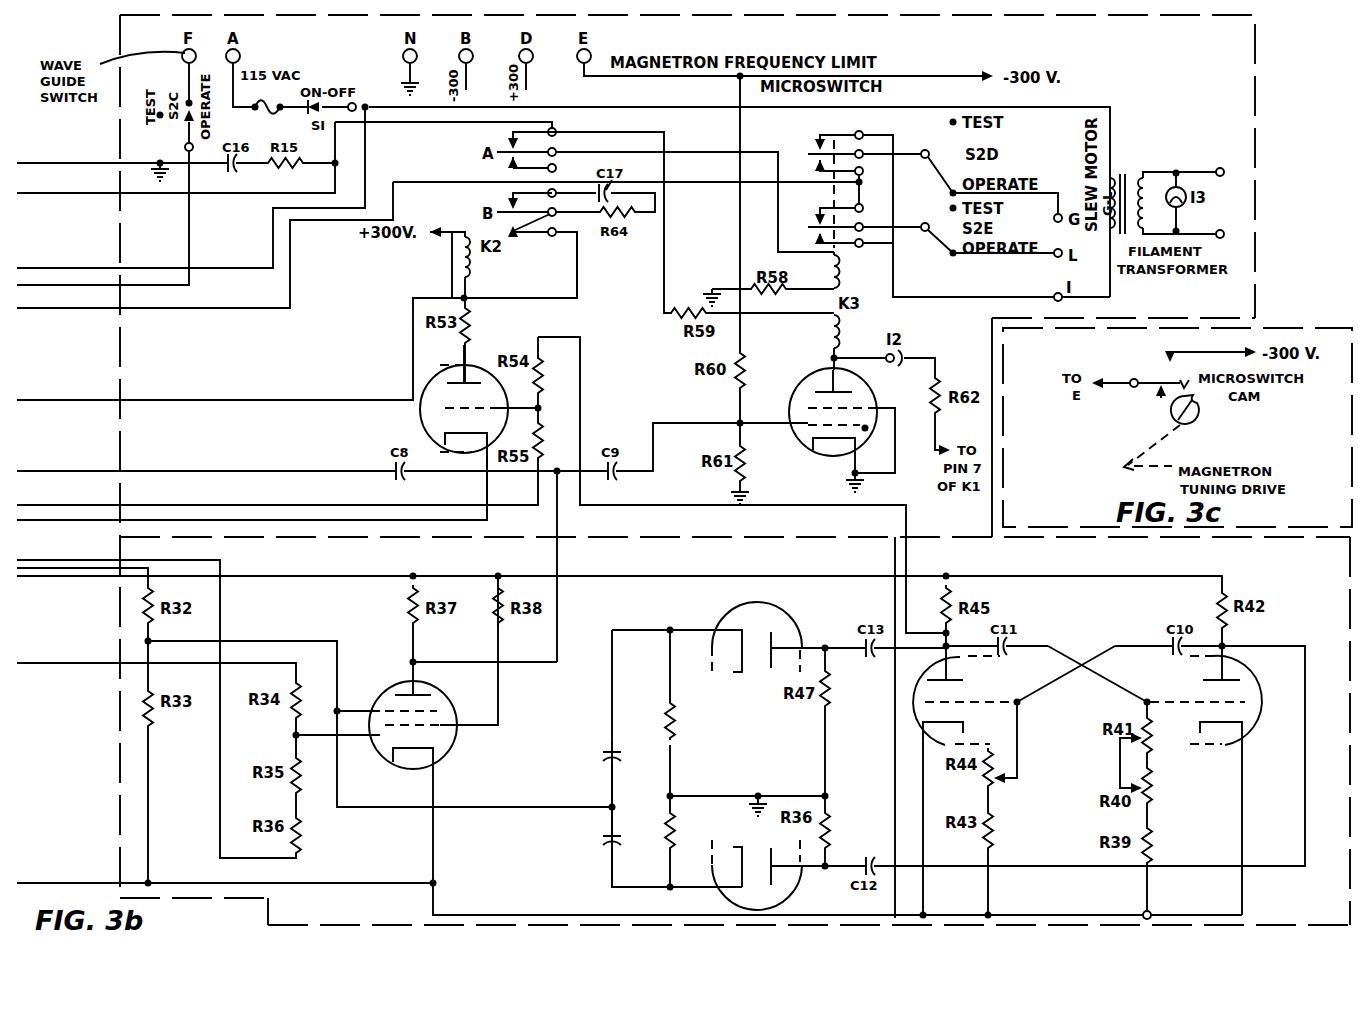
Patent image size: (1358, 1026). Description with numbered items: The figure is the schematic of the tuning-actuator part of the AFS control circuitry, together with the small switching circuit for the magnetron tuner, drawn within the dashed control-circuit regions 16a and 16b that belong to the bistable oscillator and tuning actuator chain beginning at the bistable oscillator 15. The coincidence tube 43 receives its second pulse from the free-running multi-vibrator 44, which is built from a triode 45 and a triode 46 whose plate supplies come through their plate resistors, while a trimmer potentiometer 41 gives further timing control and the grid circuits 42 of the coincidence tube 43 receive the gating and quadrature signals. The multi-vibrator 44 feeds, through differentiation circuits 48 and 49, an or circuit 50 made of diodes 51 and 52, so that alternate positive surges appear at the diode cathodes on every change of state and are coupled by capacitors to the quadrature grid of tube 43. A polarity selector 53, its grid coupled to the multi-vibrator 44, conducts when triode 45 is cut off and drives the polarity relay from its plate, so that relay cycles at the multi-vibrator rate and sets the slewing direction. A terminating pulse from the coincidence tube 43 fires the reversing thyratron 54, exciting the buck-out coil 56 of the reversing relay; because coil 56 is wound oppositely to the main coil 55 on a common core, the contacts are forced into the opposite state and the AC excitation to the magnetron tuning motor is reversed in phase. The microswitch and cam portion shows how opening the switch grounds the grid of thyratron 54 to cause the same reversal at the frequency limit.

The bistable oscillator 15 is at (1350, 568).
The first portion of control circuit 16a is at (808, 540).
The second portion of control circuit 16b is at (1137, 17).
The trimmer potentiometer 41 is at (389, 782).
The control grids of tube 42 is at (313, 735).
The coincidence tube 43 is at (382, 752).
The free-running multi-vibrator 44 is at (1079, 662).
The triode 45 is at (900, 709).
The triode 46 is at (1262, 718).
The differentiation circuit 48 is at (840, 656).
The differentiation circuit 49 is at (836, 858).
The or circuit 50 is at (646, 620).
The diode 51 is at (797, 893).
The diode 52 is at (725, 612).
The polarity selector 53 is at (452, 380).
The reversing thyratron 54 is at (801, 390).
The main coil 55 is at (837, 270).
The buck-out coil 56 is at (837, 328).